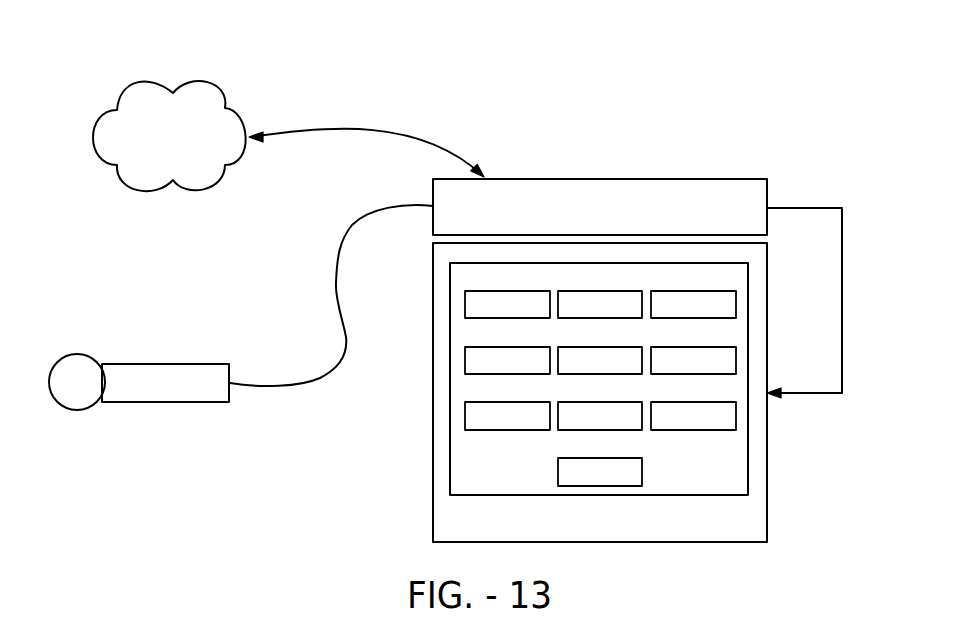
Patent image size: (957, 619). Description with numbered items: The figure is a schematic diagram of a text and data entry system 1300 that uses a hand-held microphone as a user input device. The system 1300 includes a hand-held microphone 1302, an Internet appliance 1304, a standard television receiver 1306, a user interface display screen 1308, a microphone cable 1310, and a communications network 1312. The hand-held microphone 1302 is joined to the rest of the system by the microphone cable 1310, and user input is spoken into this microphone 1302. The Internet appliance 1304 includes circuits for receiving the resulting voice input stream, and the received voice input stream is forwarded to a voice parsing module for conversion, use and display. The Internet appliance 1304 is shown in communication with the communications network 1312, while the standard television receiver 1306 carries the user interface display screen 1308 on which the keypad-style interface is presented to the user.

The text and data entry system 1300 is at (321, 496).
The hand-held microphone 1302 is at (165, 364).
The Internet appliance 1304 is at (643, 179).
The standard television receiver 1306 is at (768, 447).
The user interface display screen 1308 is at (718, 496).
The microphone cable 1310 is at (337, 285).
The communications network 1312 is at (197, 81).